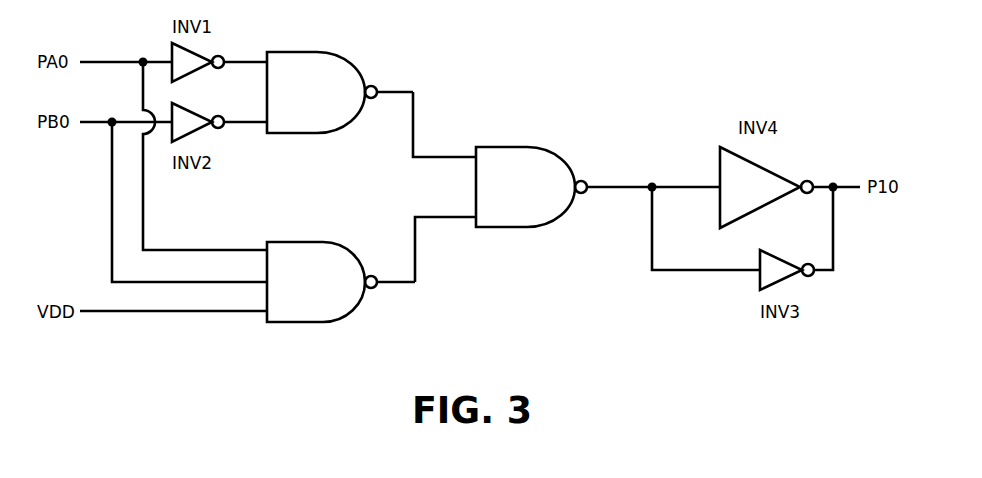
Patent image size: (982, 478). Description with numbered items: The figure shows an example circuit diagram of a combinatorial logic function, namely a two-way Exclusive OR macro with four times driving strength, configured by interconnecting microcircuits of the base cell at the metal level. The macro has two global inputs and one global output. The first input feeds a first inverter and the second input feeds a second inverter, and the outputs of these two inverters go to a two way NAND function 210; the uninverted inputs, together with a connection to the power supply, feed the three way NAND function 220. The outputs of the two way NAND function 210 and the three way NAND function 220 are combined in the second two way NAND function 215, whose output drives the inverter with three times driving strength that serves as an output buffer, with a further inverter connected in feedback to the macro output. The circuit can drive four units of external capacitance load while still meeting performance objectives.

The two way NAND function 210 is at (318, 50).
The two way NAND function 215 is at (527, 144).
The three way NAND function 220 is at (318, 239).